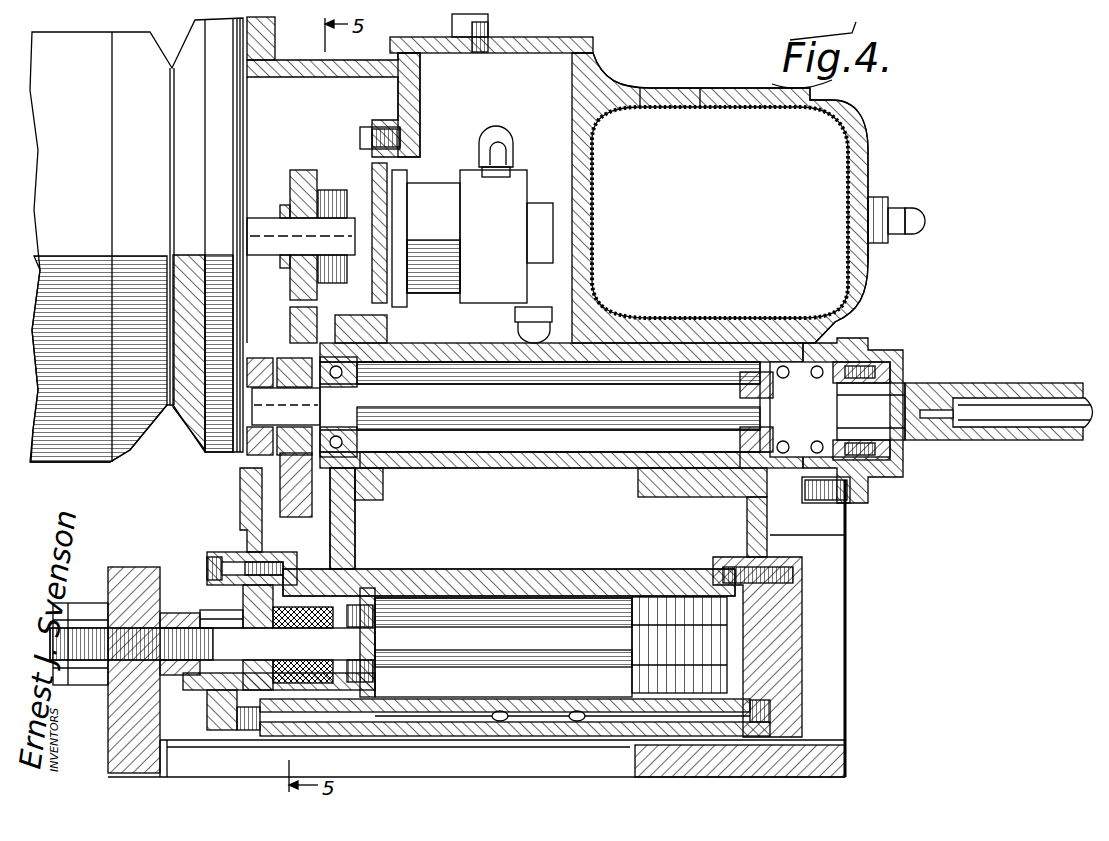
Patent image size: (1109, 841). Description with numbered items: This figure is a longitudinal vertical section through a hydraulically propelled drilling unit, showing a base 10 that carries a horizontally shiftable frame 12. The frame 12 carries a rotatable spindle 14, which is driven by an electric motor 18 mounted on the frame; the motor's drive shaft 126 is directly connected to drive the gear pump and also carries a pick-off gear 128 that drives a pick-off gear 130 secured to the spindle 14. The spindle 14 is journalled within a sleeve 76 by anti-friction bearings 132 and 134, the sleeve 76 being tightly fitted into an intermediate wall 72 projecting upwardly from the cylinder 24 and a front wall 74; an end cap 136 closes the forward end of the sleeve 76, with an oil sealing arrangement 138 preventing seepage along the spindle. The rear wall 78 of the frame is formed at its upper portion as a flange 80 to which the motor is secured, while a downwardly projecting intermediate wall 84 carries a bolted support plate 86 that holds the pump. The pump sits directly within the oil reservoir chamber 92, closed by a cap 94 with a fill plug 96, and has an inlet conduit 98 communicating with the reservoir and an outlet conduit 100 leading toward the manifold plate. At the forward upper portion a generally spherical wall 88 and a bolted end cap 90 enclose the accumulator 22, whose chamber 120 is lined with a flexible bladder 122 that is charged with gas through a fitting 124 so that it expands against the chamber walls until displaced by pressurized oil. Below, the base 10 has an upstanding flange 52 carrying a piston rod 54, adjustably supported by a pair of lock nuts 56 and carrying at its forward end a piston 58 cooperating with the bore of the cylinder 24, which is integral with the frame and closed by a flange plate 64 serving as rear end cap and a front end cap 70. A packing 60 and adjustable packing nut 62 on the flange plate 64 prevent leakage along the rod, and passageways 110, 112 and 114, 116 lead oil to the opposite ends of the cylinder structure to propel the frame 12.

The base 10 is at (838, 770).
The shiftable frame 12 is at (628, 88).
The rotatable spindle 14 is at (940, 445).
The electric motor 18 is at (100, 244).
The accumulator 22 is at (690, 88).
The cylinder 24 is at (535, 570).
The upstanding flange 52 is at (251, 606).
The piston rod 54 is at (430, 640).
The adjustable lock nuts 56 is at (85, 603).
The piston 58 is at (650, 597).
The packing 60 is at (300, 628).
The adjustable packing nut 62 is at (225, 628).
The flange plate 64 is at (216, 552).
The front end cap 70 is at (448, 280).
The intermediate wall 72 is at (355, 530).
The front wall 74 is at (847, 535).
The sleeve 76 is at (548, 470).
The rear wall 78 is at (242, 490).
The flange 80 is at (262, 32).
The downwardly projecting intermediate wall 84 is at (420, 90).
The support plate 86 is at (372, 163).
The spherical wall 88 is at (582, 150).
The end cap 90 is at (866, 290).
The reservoir chamber 92 is at (302, 140).
The cap 94 is at (593, 46).
The fill plug 96 is at (488, 22).
The inlet conduit 98 is at (515, 328).
The outlet conduit 100 is at (525, 104).
The passageway 110 is at (625, 722).
The passageway 112 is at (715, 725).
The passageway 114 is at (480, 722).
The passageway 116 is at (385, 722).
The accumulator chamber 120 is at (735, 250).
The flexible bladder 122 is at (758, 125).
The fitting 124 is at (930, 189).
The drive shaft 126 is at (283, 193).
The pick-off gear 128 is at (290, 275).
The pick-off gear 130 is at (290, 326).
The anti-friction bearing 132 is at (350, 404).
The anti-friction bearing 134 is at (818, 413).
The end cap 136 is at (880, 480).
The oil sealing arrangement 138 is at (903, 372).